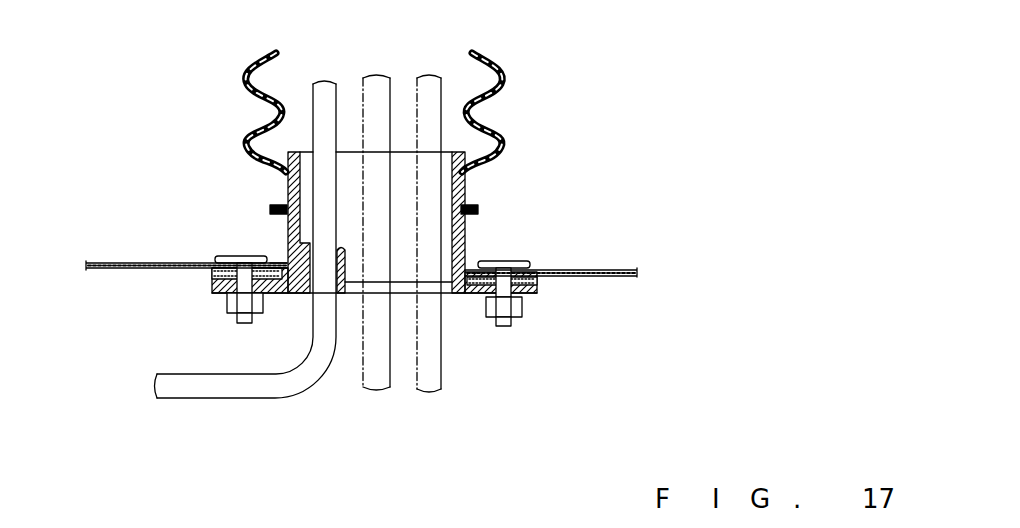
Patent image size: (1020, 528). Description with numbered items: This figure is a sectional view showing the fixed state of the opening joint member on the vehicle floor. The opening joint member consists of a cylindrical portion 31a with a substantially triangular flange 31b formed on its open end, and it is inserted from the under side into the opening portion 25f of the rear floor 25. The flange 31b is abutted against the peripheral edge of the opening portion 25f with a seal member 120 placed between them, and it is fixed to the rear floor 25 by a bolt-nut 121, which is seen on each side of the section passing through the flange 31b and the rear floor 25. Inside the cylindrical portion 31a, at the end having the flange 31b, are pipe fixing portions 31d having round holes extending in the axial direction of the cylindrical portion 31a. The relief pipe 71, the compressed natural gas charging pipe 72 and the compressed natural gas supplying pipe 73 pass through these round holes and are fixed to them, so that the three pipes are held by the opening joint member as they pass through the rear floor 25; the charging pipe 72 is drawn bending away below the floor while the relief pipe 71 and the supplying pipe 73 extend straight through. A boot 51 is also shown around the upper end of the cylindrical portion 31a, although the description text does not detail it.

The boot 51 is at (497, 102).
The cylindrical portion 31a is at (467, 240).
The flange 31b is at (207, 286).
The pipe fixing portion 31d is at (349, 284).
The rear floor 25 is at (145, 260).
The opening portion 25f is at (283, 262).
The seal member 120 is at (207, 273).
The bolt-nut 121 is at (244, 257).
The relief pipe 71 is at (441, 376).
The compressed natural gas charging pipe 72 is at (266, 399).
The compressed natural gas supplying pipe 73 is at (370, 392).